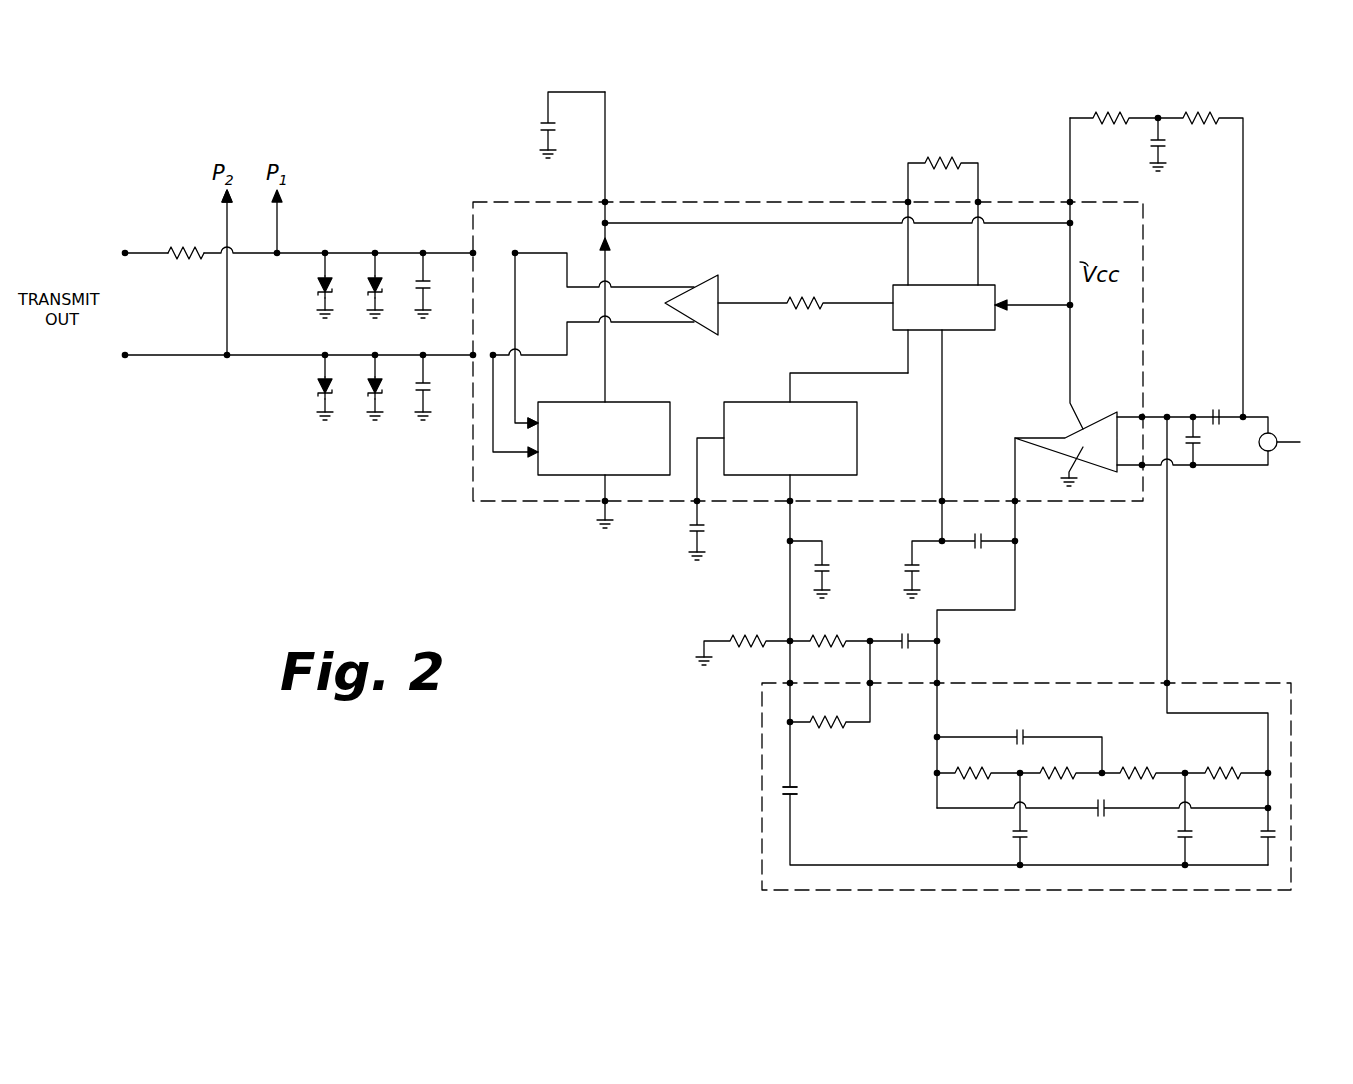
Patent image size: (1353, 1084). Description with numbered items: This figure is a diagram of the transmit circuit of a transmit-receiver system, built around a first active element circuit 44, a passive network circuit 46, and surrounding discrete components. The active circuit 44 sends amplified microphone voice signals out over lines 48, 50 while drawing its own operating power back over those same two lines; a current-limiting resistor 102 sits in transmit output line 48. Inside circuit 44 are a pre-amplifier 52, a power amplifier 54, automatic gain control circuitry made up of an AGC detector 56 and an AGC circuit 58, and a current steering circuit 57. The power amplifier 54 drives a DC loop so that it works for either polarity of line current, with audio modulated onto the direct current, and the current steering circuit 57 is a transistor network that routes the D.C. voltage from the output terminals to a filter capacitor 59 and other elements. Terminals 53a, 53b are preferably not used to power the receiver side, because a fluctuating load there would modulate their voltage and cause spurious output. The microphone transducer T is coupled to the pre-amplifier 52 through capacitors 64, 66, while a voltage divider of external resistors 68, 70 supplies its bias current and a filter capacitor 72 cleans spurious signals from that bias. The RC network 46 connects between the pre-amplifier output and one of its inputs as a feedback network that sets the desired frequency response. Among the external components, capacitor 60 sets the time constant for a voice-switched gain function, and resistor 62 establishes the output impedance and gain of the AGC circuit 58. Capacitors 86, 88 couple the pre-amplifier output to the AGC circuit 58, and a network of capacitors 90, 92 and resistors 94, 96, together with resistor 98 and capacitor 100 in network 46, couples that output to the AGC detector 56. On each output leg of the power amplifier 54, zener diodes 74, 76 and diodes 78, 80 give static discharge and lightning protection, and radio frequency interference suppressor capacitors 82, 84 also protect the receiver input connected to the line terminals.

The first active element circuit 44 is at (722, 202).
The passive network circuit 46 is at (1259, 683).
The line 48 is at (134, 242).
The line 50 is at (119, 366).
The current-limiting resistor 102 is at (164, 244).
The zener diode 74 is at (318, 290).
The zener diode 76 is at (308, 390).
The diode 78 is at (368, 292).
The diode 80 is at (367, 397).
The radio frequency interference suppressor capacitor 82 is at (433, 278).
The radio frequency interference suppressor capacitor 84 is at (438, 389).
The terminal 53a is at (606, 200).
The terminal 53b is at (603, 503).
The filter capacitor 59 is at (534, 132).
The power amplifier 54 is at (711, 274).
The current steering circuit 57 is at (672, 378).
The AGC detector 56 is at (858, 434).
The AGC circuit 58 is at (965, 333).
The capacitor 60 is at (669, 535).
The resistor 62 is at (956, 152).
The pre-amplifier 52 is at (1116, 408).
The capacitor 64 is at (1216, 407).
The capacitor 66 is at (1203, 440).
The resistor 68 is at (1108, 109).
The resistor 70 is at (1204, 108).
The filter capacitor 72 is at (1168, 145).
The capacitor 86 is at (982, 550).
The capacitor 88 is at (902, 567).
The capacitor 90 is at (908, 648).
The capacitor 92 is at (829, 568).
The resistor 94 is at (836, 634).
The resistor 96 is at (750, 634).
The resistor 98 is at (830, 732).
The capacitor 100 is at (798, 792).
The microphone transducer T is at (1290, 443).